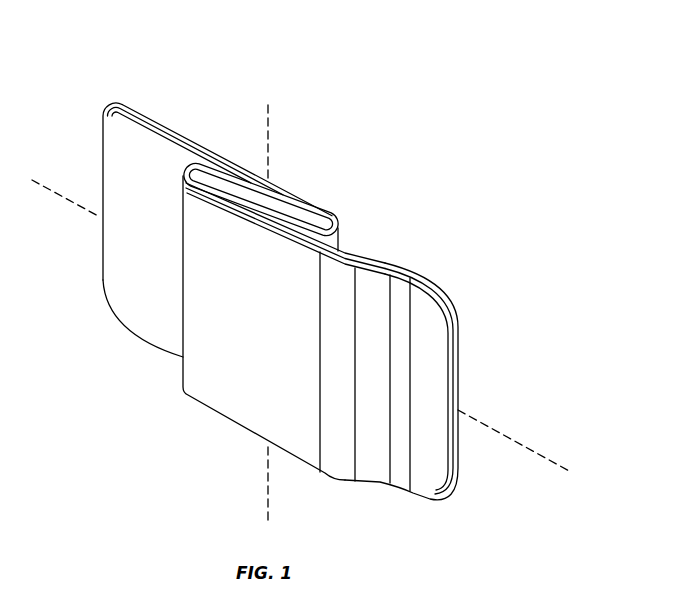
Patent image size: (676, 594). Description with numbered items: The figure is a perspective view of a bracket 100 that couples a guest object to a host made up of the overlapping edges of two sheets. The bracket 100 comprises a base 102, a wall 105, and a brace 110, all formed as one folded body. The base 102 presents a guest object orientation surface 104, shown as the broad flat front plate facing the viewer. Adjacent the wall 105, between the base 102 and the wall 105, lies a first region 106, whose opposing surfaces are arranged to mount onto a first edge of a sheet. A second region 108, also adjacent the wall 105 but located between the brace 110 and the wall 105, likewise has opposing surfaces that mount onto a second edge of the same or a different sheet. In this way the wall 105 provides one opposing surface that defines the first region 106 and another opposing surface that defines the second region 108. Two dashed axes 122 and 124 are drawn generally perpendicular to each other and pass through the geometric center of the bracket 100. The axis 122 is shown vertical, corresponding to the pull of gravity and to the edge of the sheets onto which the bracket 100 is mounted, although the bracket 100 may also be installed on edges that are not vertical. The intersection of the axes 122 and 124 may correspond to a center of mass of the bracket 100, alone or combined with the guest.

The bracket 100 is at (82, 60).
The base 102 is at (442, 285).
The guest object orientation surface 104 is at (253, 405).
The wall 105 is at (272, 200).
The first region 106 is at (358, 245).
The second region 108 is at (186, 155).
The brace 110 is at (178, 127).
The axis 122 is at (270, 122).
The axis 124 is at (557, 463).